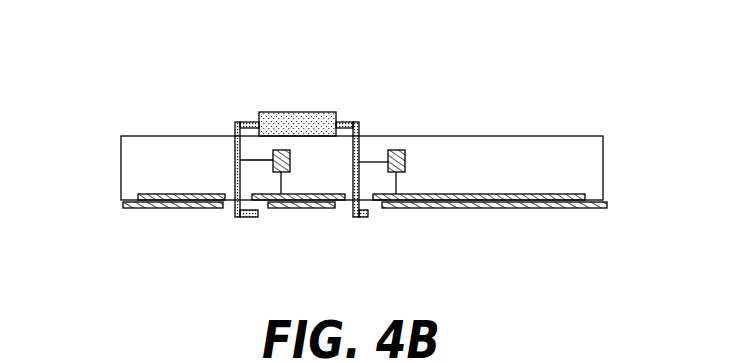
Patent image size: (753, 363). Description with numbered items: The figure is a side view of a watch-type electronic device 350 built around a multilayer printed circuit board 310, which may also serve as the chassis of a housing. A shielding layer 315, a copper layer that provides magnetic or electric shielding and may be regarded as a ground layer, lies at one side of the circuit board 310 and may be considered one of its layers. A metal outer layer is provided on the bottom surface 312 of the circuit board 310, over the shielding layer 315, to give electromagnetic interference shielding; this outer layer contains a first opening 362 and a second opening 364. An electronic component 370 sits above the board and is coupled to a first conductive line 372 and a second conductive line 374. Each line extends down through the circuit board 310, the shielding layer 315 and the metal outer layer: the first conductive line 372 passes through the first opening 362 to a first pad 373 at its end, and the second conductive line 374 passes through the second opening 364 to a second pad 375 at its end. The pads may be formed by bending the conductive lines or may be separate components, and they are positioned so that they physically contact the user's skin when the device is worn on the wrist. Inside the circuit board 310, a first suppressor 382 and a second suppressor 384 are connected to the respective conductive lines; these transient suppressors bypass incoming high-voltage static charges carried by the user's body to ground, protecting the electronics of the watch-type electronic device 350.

The watch-type electronic device 350 is at (151, 80).
The circuit board 310 is at (130, 166).
The bottom surface 312 is at (600, 202).
The shielding layer 315 is at (566, 195).
The first opening 362 is at (236, 236).
The second opening 364 is at (374, 236).
The electronic component 370 is at (318, 112).
The first conductive line 372 is at (240, 121).
The first pad 373 is at (248, 218).
The second conductive line 374 is at (359, 126).
The second pad 375 is at (362, 218).
The first suppressor 382 is at (272, 160).
The second suppressor 384 is at (405, 162).